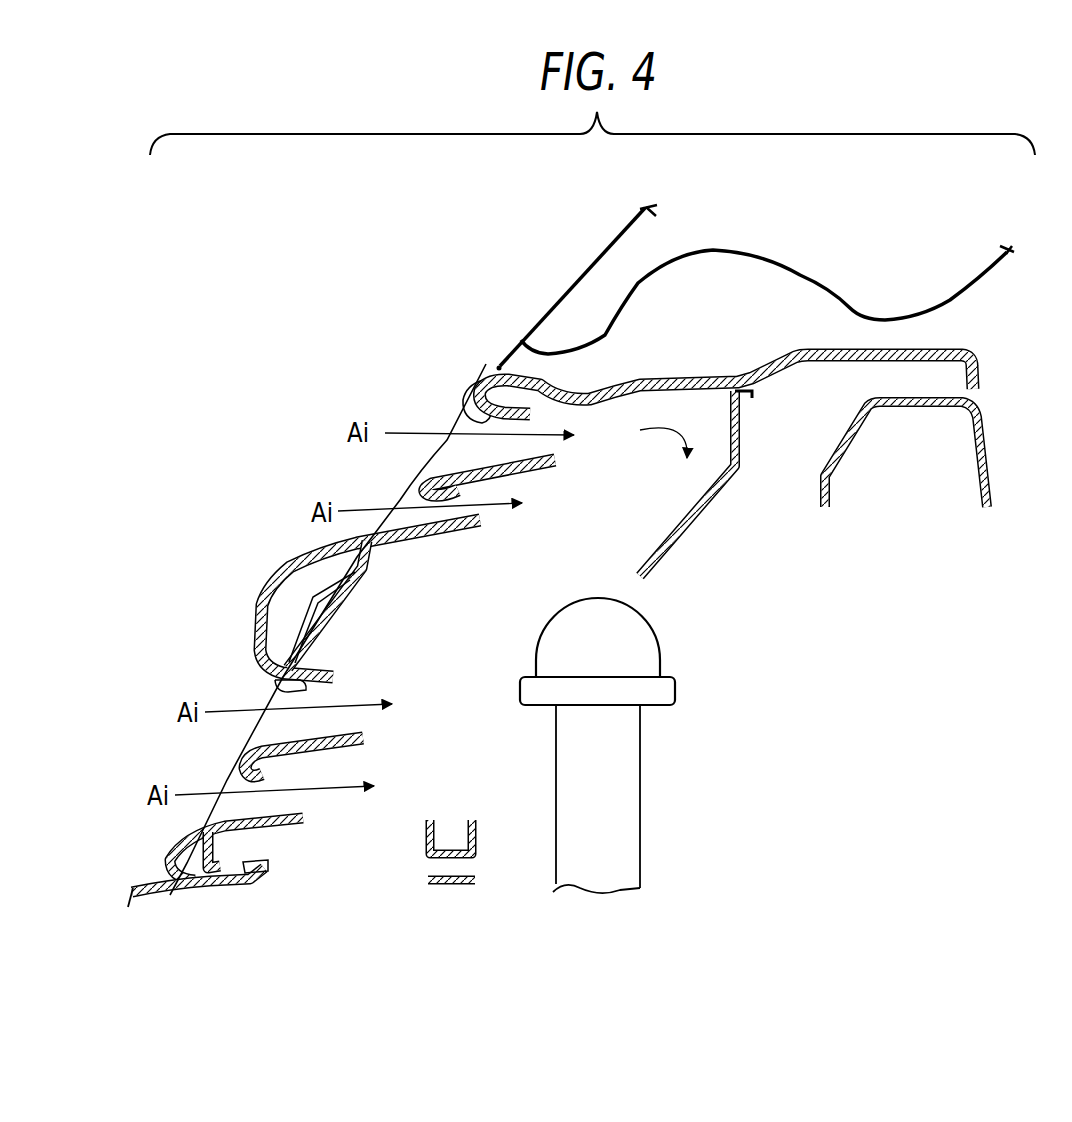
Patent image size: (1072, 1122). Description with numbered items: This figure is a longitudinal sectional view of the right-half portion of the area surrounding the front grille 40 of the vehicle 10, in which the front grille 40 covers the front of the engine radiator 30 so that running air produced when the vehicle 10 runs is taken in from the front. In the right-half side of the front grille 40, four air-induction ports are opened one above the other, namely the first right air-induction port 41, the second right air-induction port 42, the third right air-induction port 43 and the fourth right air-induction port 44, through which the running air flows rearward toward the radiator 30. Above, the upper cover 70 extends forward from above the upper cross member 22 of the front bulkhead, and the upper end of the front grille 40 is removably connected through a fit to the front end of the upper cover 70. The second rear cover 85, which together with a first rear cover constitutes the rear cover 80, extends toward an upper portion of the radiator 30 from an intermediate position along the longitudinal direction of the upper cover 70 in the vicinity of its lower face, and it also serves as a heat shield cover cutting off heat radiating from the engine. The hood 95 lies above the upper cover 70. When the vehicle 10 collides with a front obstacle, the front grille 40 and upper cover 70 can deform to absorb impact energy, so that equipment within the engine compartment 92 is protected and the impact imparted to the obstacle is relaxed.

The vehicle 10 is at (297, 268).
The upper cross member 22 is at (987, 457).
The engine radiator 30 is at (620, 820).
The front grille 40 is at (482, 374).
The first right air-induction port 41 is at (478, 418).
The second right air-induction port 42 is at (423, 496).
The third right air-induction port 43 is at (278, 691).
The fourth right air-induction port 44 is at (243, 775).
The upper cover 70 is at (818, 347).
The rear cover 80 is at (738, 484).
The second rear cover 85 is at (690, 513).
The engine compartment 92 is at (913, 566).
The hood 95 is at (593, 252).